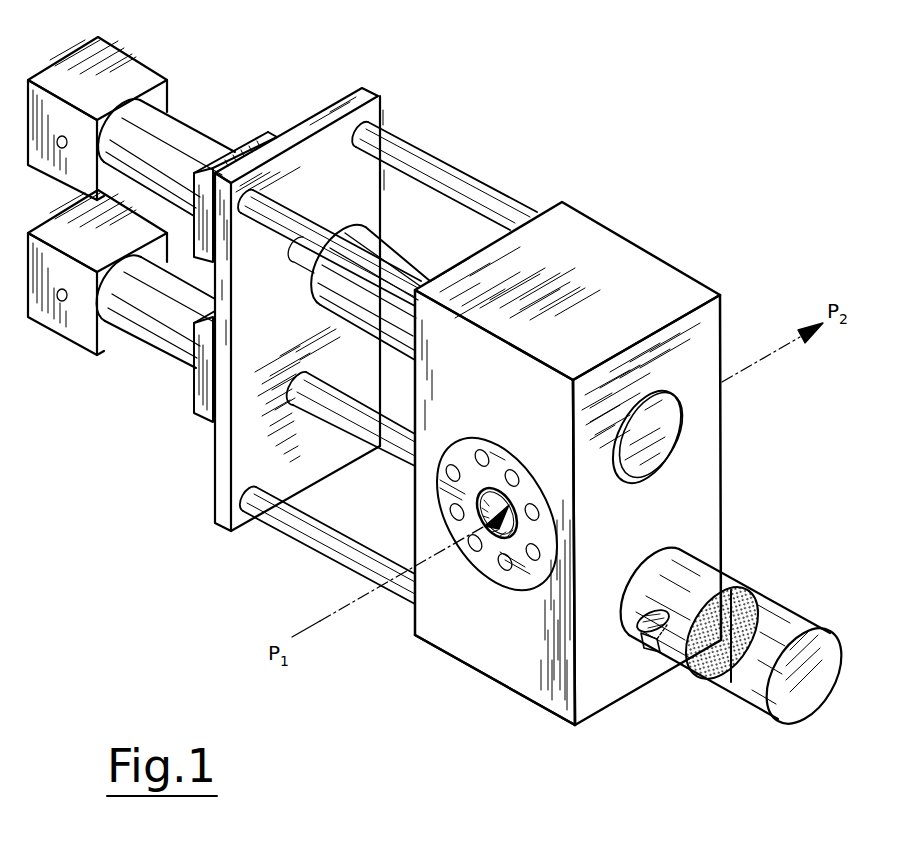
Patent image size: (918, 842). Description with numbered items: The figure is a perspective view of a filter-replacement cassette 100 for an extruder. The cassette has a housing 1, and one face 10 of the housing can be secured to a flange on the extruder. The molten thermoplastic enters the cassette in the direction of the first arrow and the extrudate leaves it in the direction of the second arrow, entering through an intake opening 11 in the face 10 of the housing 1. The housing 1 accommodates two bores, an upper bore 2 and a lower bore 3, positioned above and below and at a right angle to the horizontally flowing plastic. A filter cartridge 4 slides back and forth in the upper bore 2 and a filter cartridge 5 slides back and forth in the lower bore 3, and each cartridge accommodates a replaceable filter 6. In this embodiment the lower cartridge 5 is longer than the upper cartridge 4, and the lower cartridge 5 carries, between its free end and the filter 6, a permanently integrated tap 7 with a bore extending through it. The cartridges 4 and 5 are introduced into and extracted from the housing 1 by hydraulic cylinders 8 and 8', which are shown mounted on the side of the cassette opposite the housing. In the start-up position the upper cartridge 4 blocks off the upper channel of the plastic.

The housing 1 is at (598, 250).
The upper bore 2 is at (660, 473).
The lower bore 3 is at (630, 637).
The upper filter cartridge 4 is at (670, 430).
The lower filter cartridge 5 is at (703, 580).
The replaceable filter 6 is at (720, 653).
The tap 7 is at (647, 647).
The hydraulic cylinder 8 is at (264, 192).
The hydraulic cylinder 8' is at (146, 344).
The face of the housing 10 is at (490, 642).
The intake opening 11 is at (495, 537).
The mold clamping device 100 is at (178, 488).